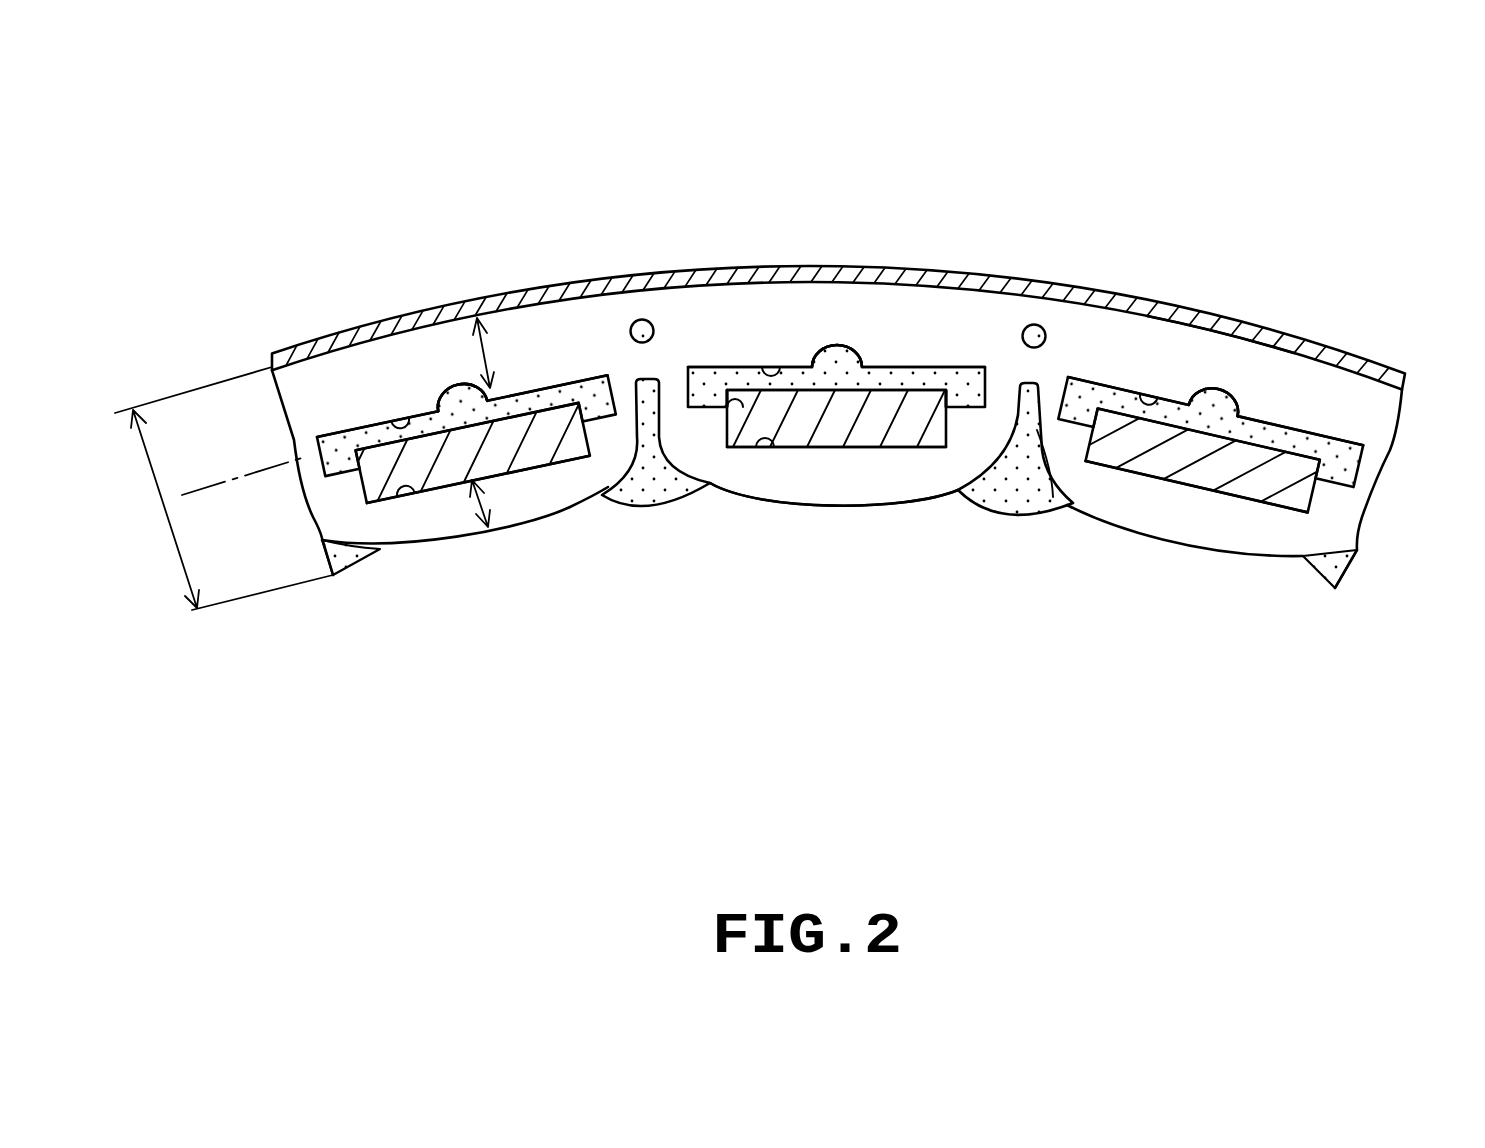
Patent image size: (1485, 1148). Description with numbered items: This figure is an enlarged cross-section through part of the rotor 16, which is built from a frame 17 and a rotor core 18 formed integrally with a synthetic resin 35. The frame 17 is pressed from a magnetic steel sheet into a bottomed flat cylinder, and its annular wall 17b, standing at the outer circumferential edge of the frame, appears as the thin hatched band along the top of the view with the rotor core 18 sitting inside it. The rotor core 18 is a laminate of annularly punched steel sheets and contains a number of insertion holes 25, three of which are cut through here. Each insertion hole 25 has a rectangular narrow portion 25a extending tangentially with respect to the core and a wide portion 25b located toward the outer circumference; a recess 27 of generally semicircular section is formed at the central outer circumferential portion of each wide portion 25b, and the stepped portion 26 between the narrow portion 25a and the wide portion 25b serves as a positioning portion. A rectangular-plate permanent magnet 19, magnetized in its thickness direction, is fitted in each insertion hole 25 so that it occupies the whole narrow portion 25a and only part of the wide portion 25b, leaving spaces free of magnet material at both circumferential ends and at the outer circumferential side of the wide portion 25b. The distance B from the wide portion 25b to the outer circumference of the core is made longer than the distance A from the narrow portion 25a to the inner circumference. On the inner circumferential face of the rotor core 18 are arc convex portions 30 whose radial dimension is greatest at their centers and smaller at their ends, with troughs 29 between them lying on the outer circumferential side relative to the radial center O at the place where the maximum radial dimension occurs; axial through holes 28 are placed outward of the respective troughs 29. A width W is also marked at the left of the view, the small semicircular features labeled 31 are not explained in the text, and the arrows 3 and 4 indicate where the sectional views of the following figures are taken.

The rotor 16 is at (1368, 311).
The frame 17 is at (916, 266).
The annular wall 17b is at (1183, 312).
The rotor core 18 is at (1192, 545).
The permanent magnet 19 is at (446, 465).
The insertion hole 25 is at (397, 423).
The narrow portion 25a is at (393, 497).
The wide portion 25b is at (553, 390).
The stepped portion 26 is at (743, 407).
The recess 27 is at (856, 345).
The through hole 28 is at (1039, 325).
The trough 29 is at (1060, 510).
The arc convex portion 30 is at (858, 504).
The recess 31 is at (330, 437).
The synthetic resin 35 is at (452, 383).
The section line 3- 3 is at (841, 249).
The section line 4- 4 is at (1045, 278).
The distance A is at (494, 503).
The distance B is at (495, 353).
The width W is at (224, 488).
The radial center O is at (216, 487).